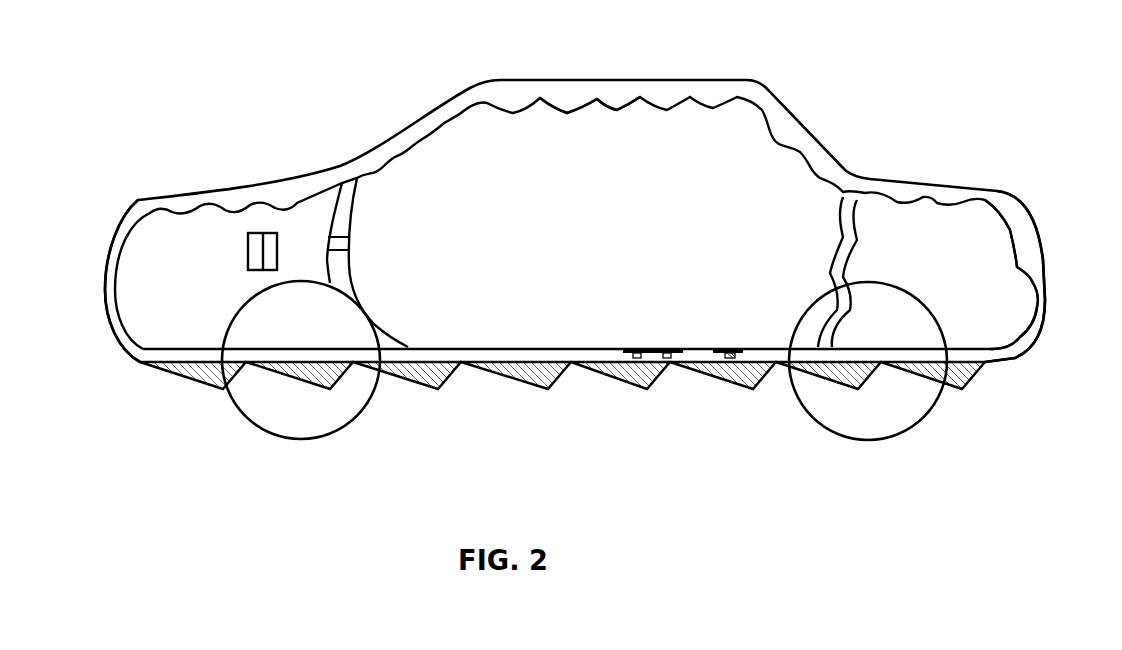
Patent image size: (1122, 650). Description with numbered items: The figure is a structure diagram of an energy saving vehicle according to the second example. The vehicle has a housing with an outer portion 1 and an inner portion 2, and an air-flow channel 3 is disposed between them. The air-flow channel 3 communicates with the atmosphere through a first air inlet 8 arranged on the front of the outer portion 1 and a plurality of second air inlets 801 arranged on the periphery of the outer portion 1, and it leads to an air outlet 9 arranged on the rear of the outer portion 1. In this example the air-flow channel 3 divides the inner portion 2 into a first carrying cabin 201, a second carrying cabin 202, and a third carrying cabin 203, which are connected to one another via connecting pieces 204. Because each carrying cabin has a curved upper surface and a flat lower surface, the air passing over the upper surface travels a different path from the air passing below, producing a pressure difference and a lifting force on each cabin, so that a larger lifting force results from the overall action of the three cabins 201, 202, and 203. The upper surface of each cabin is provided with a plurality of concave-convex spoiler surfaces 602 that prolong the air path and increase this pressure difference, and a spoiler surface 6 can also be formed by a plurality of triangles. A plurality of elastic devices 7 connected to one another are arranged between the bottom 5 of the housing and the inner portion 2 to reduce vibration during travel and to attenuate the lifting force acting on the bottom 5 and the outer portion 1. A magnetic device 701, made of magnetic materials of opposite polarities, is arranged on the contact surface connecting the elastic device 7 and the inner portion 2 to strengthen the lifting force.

The outer portion of housing 1 is at (478, 82).
The inner portion of housing 2 is at (523, 103).
The air-flow channel 3 is at (568, 95).
The concave-convex spoiler surface 602 is at (600, 97).
The spoiler surface 6 is at (613, 370).
The second carrying cabin 202 is at (768, 218).
The first carrying cabin 201 is at (283, 213).
The connecting piece 204 is at (340, 232).
The second air inlet 801 is at (258, 247).
The first air inlet 8 is at (100, 278).
The third carrying cabin 203 is at (947, 260).
The air outlet 9 is at (1043, 270).
The bottom of housing 5 is at (395, 373).
The elastic device 7 is at (647, 357).
The magnetic device 701 is at (727, 360).